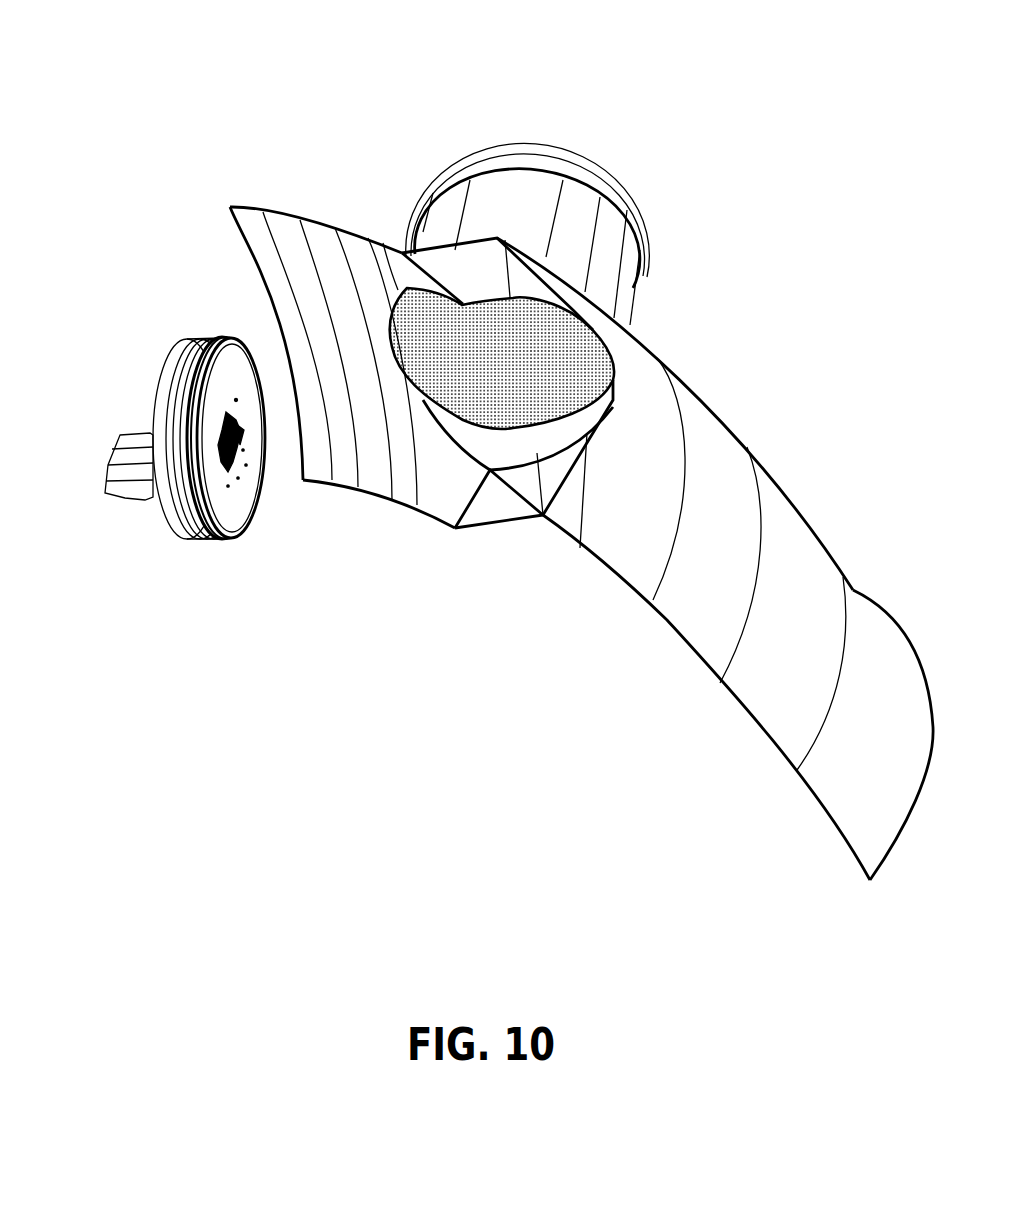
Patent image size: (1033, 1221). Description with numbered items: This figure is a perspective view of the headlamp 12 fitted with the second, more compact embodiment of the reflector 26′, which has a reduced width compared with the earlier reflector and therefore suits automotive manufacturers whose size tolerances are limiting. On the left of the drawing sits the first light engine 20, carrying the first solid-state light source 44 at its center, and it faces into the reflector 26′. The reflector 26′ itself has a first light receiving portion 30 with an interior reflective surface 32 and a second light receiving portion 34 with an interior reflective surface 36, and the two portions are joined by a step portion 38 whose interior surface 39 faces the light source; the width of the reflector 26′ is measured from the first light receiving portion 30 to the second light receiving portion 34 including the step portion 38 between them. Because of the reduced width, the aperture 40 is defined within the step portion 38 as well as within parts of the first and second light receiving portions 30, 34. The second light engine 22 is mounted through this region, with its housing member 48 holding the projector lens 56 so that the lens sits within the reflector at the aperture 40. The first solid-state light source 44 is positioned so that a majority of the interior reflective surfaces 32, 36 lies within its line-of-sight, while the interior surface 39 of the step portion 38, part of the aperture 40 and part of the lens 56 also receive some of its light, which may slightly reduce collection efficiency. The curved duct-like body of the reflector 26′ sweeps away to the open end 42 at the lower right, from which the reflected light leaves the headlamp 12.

The headlamp 12 is at (65, 27).
The first light engine 20 is at (195, 506).
The second light engine 22 is at (577, 213).
The reflector 26′ is at (533, 502).
The first light receiving portion of reflector 30 is at (285, 202).
The interior reflective surface of first light receiving portion 32 is at (373, 470).
The second light receiving portion of reflector 34 is at (764, 456).
The interior reflective surface of second light receiving portion 36 is at (752, 662).
The step portion of reflector 38 is at (440, 234).
The interior surface of step portion 39 is at (483, 262).
The aperture in step portion 40 is at (508, 443).
The open end of reflector 42 is at (884, 864).
The first solid-state light source 44 is at (240, 447).
The housing member 48 is at (622, 297).
The projector lens 56 is at (568, 363).